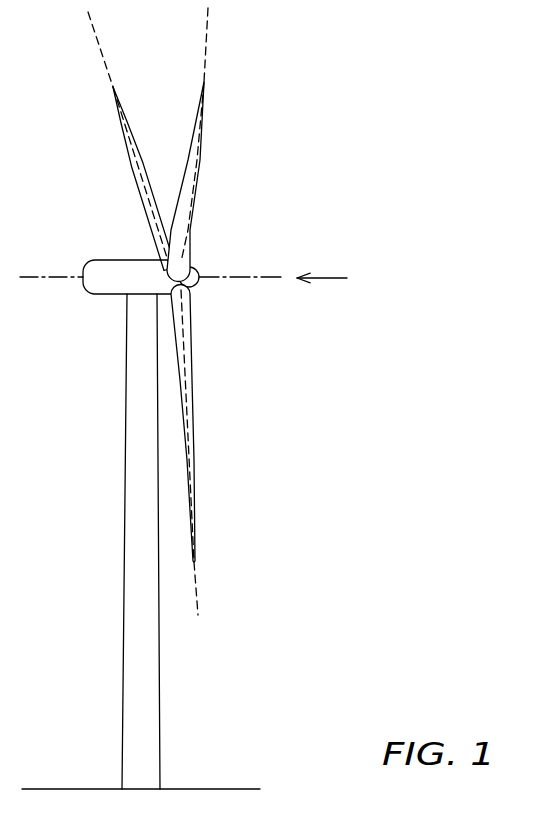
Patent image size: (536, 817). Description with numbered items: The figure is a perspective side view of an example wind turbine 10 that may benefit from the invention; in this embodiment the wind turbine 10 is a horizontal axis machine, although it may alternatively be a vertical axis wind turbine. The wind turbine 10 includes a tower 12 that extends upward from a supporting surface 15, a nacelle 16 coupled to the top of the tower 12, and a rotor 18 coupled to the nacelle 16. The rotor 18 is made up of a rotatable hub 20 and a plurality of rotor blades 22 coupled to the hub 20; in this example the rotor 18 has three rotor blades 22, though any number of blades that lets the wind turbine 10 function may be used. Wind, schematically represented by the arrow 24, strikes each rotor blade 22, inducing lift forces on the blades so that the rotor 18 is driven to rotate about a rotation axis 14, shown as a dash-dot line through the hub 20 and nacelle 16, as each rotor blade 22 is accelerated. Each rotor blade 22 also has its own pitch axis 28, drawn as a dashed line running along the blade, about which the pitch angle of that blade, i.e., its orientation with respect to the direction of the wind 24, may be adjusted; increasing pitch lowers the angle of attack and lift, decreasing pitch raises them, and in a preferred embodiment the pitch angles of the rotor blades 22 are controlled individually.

The wind turbine 10 is at (422, 205).
The tower 12 is at (124, 545).
The rotation axis 14 is at (230, 280).
The supporting surface 15 is at (197, 789).
The nacelle 16 is at (108, 295).
The rotor 18 is at (200, 197).
The rotatable hub 20 is at (197, 271).
The rotor blades 22 is at (152, 217).
The wind 24 is at (330, 277).
The pitch axis 28 is at (102, 54).